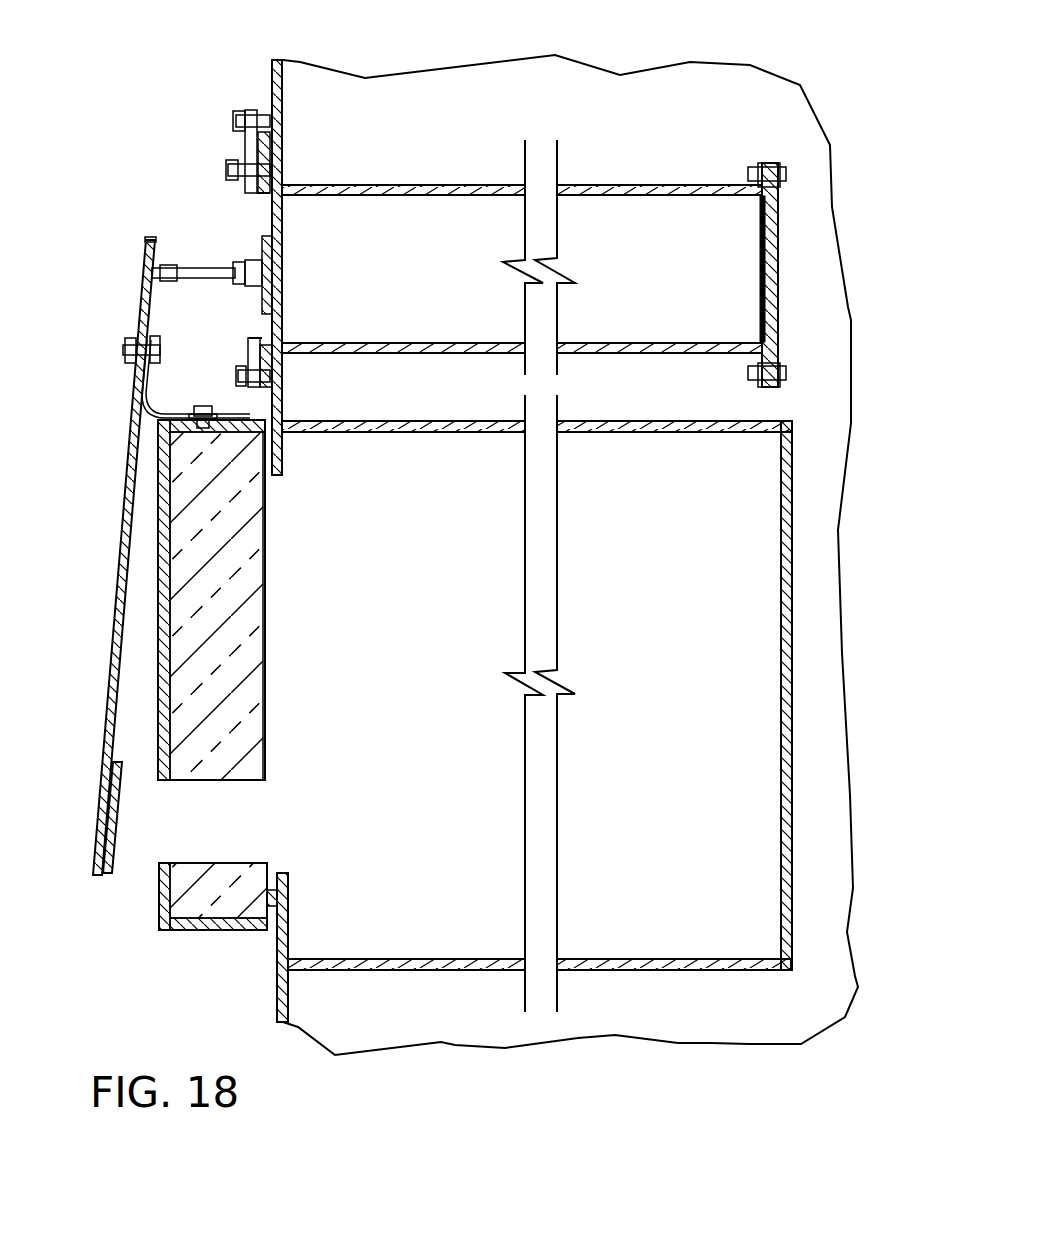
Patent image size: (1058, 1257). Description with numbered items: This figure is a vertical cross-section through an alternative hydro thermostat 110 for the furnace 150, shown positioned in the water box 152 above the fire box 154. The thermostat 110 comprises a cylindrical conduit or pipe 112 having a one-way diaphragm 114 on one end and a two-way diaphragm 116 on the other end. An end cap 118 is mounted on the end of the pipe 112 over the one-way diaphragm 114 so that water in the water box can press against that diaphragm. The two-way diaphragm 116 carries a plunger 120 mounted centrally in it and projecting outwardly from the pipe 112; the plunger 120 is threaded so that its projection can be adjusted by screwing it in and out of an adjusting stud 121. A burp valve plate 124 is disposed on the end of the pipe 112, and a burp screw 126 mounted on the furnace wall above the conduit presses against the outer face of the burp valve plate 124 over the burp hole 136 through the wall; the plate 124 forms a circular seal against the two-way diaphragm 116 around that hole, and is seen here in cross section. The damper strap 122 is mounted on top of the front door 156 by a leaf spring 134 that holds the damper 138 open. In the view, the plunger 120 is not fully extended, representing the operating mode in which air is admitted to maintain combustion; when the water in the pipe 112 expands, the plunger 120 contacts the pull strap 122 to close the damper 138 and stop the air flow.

The thermostat 110 is at (461, 168).
The cylindrical conduit or pipe 112 is at (597, 183).
The one-way diaphragm 114 is at (762, 288).
The two-way diaphragm 116 is at (277, 327).
The end cap 118 is at (780, 237).
The plunger 120 is at (165, 265).
The adjusting stud 121 is at (272, 242).
The damper strap 122 is at (112, 715).
The burp valve plate 124 is at (263, 193).
The burp screw 126 is at (232, 170).
The leaf spring 134 is at (150, 402).
The burp hole 136 is at (283, 183).
The damper 138 is at (120, 826).
The furnace 150 is at (764, 49).
The water box 152 is at (272, 95).
The fire box 154 is at (790, 882).
The front door 156 is at (265, 602).